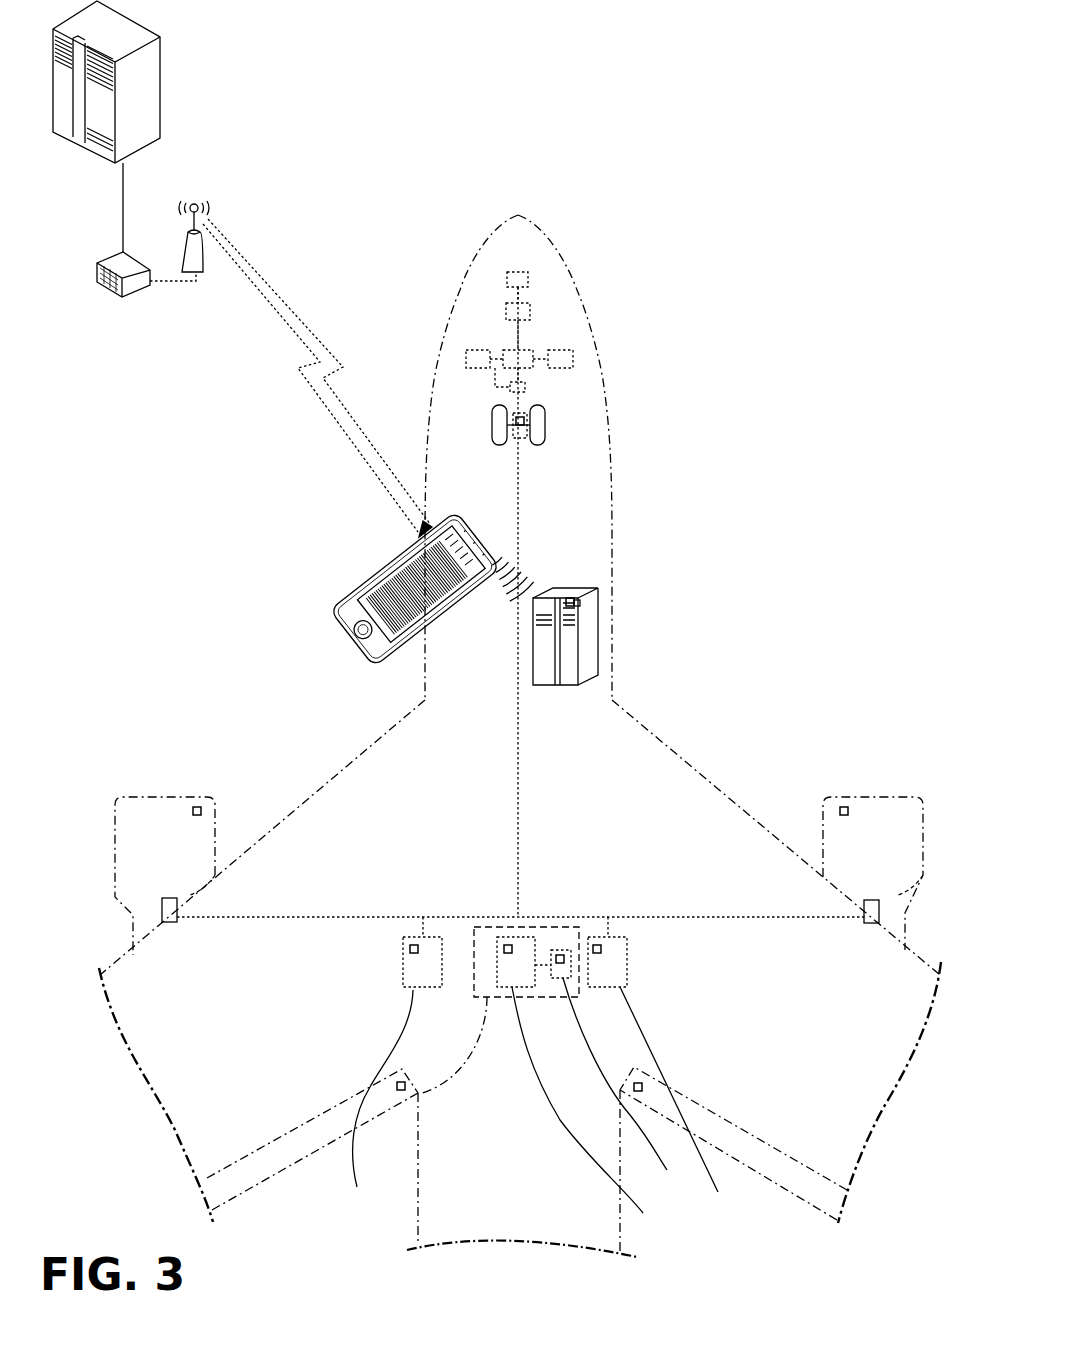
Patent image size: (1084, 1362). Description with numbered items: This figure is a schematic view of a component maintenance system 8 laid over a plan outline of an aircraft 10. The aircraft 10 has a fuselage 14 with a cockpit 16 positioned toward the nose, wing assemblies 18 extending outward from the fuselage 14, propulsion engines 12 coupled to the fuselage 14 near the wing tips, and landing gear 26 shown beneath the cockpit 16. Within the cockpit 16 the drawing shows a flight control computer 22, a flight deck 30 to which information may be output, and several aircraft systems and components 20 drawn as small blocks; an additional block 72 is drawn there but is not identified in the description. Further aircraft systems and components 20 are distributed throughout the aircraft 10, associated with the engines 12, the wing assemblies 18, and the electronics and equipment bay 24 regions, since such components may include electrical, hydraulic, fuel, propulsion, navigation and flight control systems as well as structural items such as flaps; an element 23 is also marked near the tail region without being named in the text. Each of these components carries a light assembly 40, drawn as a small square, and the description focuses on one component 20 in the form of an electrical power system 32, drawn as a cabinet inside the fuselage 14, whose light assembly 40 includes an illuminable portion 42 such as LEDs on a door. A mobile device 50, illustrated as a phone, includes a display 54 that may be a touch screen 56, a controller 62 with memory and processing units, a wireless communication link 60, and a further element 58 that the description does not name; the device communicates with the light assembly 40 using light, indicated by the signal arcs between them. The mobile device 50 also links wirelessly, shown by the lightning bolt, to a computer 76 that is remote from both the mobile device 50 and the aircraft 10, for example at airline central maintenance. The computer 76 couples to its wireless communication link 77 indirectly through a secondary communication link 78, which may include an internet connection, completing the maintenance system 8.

The computer 76 is at (150, 28).
The secondary communication link 78 is at (113, 258).
The wireless communication link 77 is at (203, 255).
The cockpit 16 is at (478, 252).
The sensor 72 is at (507, 279).
The flight control computer 22 is at (530, 312).
The flight deck 30 is at (523, 352).
The aircraft systems and components 20 is at (466, 358).
The light assembly 40 is at (525, 418).
The landing gear 26 is at (537, 428).
The display 54 is at (422, 537).
The housing 58 is at (455, 515).
The touch screen 56 is at (402, 552).
The controller 62 is at (511, 546).
The component maintenance system 8 is at (525, 578).
The fuselage 14 is at (614, 544).
The mobile device 50 is at (339, 603).
The wireless communication link 60 is at (496, 575).
The illuminable portion 42 is at (580, 603).
The aircraft 10 is at (392, 676).
The electrical power system 32 is at (568, 684).
The wing assemblies 18 is at (295, 812).
The propulsion engines 12 is at (905, 797).
The tail section 23 is at (418, 1097).
The electronics and equipment bay 24 is at (260, 1143).